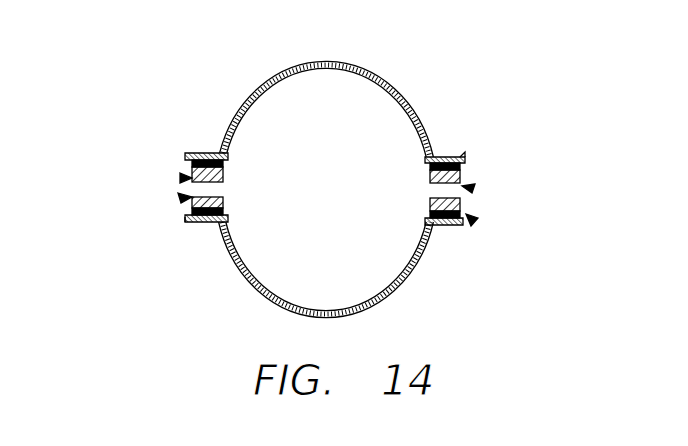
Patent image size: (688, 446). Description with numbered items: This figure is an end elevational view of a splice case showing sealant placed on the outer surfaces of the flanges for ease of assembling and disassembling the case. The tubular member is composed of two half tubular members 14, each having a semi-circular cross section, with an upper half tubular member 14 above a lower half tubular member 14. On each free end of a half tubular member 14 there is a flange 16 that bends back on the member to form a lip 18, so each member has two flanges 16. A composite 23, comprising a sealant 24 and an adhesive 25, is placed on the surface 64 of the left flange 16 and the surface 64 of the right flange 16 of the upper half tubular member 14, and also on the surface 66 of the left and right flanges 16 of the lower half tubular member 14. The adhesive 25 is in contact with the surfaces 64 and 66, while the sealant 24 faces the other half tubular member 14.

The half tubular member 14 is at (385, 72).
The flange 16 is at (205, 155).
The lip 18 is at (188, 157).
The composite 23 is at (182, 178).
The sealant 24 is at (190, 168).
The adhesive 25 is at (224, 165).
The surface of the flange 64 is at (462, 170).
The upper surface of the flange 66 is at (188, 220).